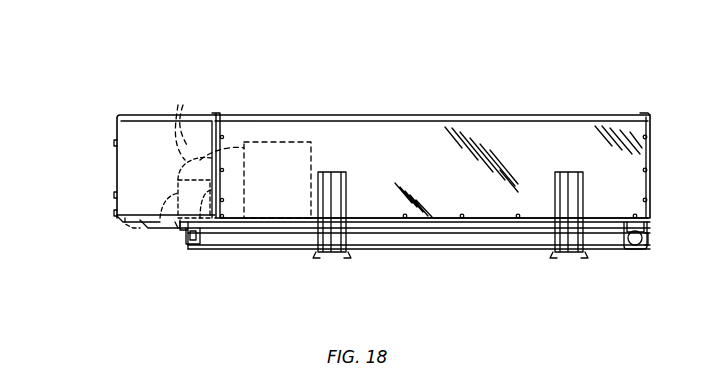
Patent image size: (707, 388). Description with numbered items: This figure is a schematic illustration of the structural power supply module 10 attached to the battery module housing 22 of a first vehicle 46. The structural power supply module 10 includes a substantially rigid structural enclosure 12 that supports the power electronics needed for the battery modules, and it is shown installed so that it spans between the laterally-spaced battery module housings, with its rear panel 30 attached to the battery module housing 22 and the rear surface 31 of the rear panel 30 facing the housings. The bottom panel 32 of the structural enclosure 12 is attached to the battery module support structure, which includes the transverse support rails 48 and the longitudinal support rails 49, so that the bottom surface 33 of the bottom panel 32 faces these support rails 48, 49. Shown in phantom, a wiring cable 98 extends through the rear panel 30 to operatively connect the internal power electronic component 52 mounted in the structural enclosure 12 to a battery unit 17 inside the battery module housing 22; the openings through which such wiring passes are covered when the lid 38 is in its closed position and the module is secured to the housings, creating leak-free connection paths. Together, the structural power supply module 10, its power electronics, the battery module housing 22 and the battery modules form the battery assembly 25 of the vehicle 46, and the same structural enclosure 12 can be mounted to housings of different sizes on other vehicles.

The structural power supply module 10 is at (90, 129).
The structural enclosure 12 is at (116, 220).
The battery unit 17 is at (268, 116).
The battery module housing 22 is at (468, 115).
The battery assembly 25 is at (370, 73).
The rear panel 30 is at (219, 113).
The rear surface 31 is at (222, 185).
The bottom panel 32 is at (178, 226).
The bottom surface 33 is at (183, 246).
The lid 38 is at (135, 115).
The vehicle 46 is at (596, 48).
The transverse support rail 48 is at (333, 252).
The longitudinal support rail 49 is at (210, 246).
The internal power electronic component 52 is at (163, 225).
The wiring cable 98 is at (181, 106).